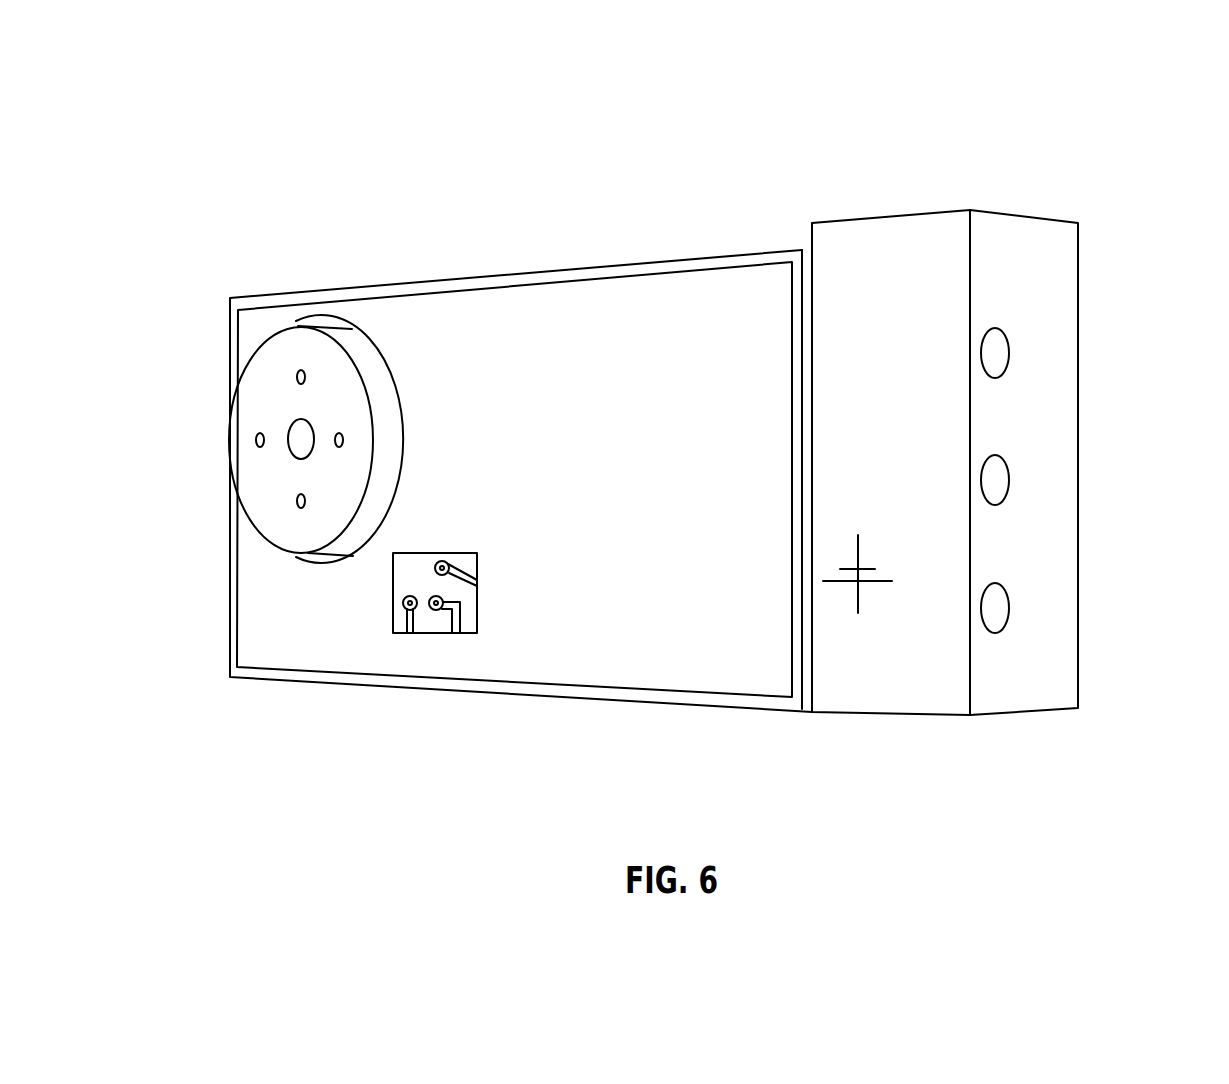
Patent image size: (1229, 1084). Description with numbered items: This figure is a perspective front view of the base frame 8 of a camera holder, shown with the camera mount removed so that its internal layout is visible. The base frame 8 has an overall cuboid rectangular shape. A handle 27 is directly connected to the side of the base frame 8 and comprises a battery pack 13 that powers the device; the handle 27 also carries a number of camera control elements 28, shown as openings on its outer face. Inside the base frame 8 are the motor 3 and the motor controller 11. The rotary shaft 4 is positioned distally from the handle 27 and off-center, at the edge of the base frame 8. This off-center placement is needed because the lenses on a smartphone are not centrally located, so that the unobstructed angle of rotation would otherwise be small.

The motor 3 is at (367, 345).
The rotary shaft 4 is at (262, 463).
The base frame 8 is at (592, 302).
The motor controller 11 is at (429, 592).
The battery pack 13 is at (872, 617).
The handle 27 is at (1040, 247).
The camera control elements 28 is at (993, 617).